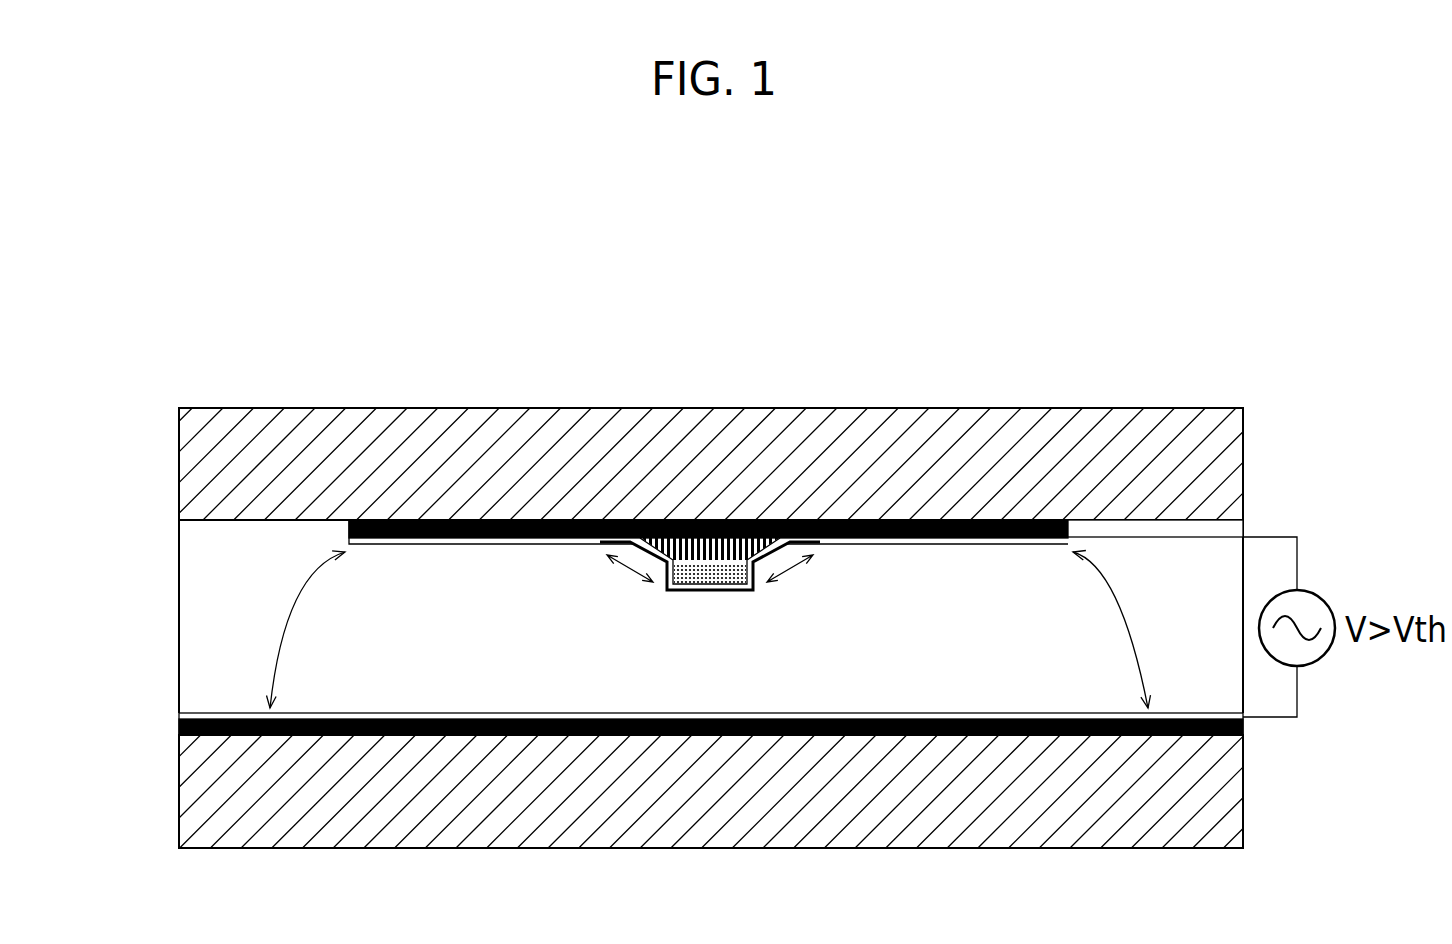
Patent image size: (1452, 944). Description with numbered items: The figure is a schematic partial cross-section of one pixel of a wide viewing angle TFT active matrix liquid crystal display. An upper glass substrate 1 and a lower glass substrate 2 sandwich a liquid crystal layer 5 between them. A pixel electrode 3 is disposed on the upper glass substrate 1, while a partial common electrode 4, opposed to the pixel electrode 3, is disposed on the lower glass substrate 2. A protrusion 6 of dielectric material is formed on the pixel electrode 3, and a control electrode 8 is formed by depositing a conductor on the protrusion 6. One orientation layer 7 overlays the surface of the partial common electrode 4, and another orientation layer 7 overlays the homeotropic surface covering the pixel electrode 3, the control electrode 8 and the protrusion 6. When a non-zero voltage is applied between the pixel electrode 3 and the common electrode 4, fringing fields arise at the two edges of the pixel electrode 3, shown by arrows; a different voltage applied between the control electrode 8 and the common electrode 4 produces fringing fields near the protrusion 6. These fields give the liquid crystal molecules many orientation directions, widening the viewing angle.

The upper glass substrate 1 is at (1220, 467).
The lower glass substrate 2 is at (1223, 797).
The pixel electrode 3 is at (350, 520).
The partial common electrode 4 is at (179, 730).
The liquid crystal layer 5 is at (185, 613).
The protrusion 6 is at (768, 548).
The orientation layer 7 is at (1070, 543).
The control electrode 8 is at (707, 562).